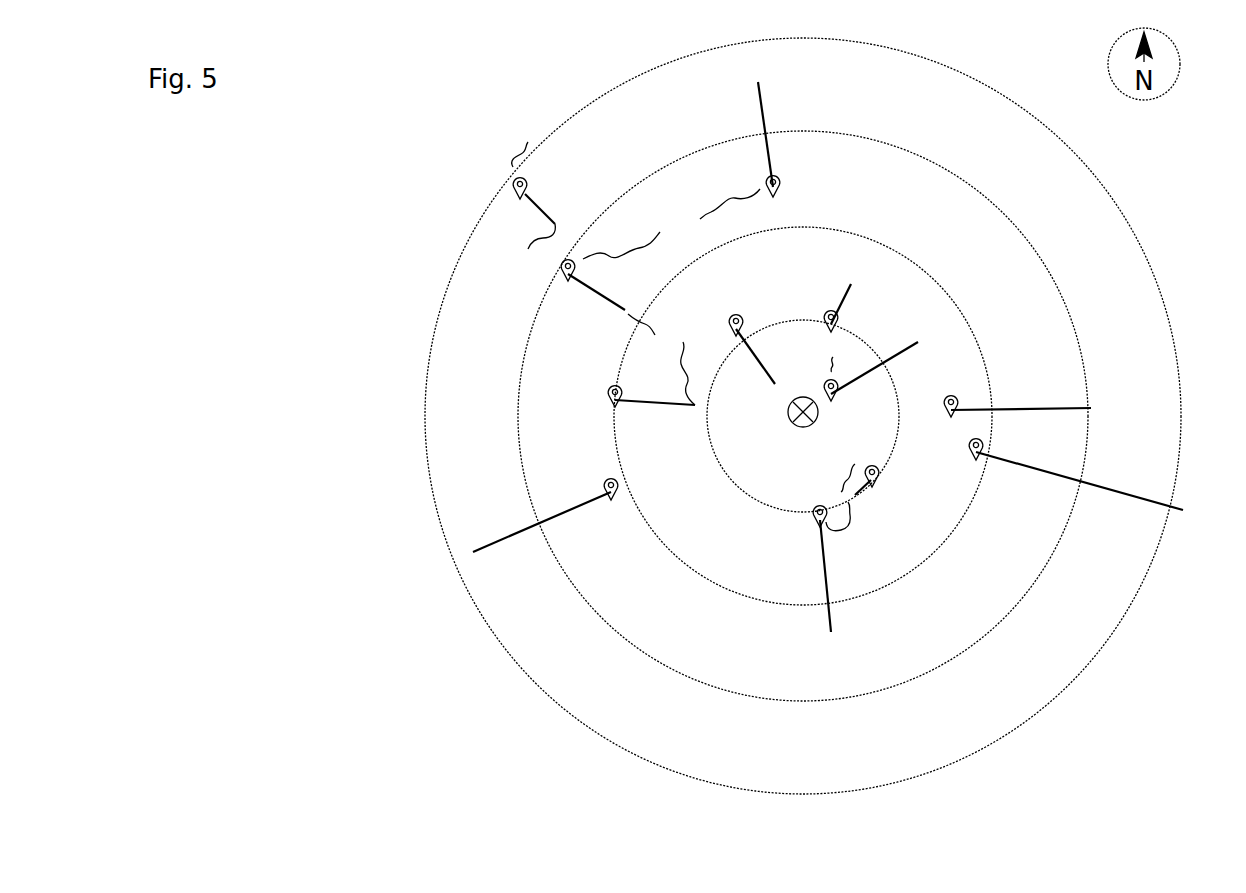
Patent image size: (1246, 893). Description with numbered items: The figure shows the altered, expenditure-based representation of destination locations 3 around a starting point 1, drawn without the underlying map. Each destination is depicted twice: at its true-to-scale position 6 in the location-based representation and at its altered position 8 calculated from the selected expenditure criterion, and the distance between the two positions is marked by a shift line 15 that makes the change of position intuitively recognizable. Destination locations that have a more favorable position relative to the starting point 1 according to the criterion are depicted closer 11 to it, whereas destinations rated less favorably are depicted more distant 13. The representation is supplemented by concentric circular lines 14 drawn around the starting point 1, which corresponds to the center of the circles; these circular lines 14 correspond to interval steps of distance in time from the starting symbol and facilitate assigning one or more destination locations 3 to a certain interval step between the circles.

The starting point 1 is at (785, 421).
The destination locations 3 is at (833, 358).
The true-to-scale position of destination location 6 is at (833, 358).
The altered position of destination location 8 is at (747, 326).
The destination location closer to starting point 11 is at (798, 333).
The destination location more distant from starting point 13 is at (696, 339).
The circular lines 14 is at (803, 416).
The shift line 15 is at (828, 357).